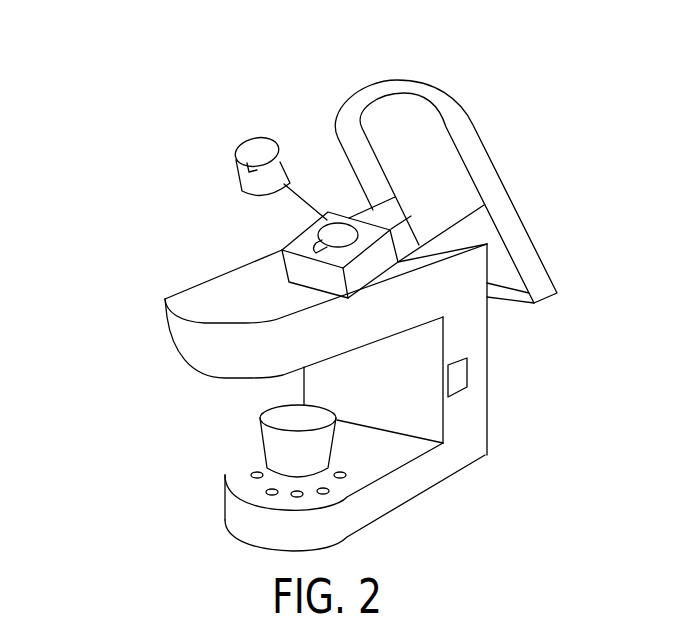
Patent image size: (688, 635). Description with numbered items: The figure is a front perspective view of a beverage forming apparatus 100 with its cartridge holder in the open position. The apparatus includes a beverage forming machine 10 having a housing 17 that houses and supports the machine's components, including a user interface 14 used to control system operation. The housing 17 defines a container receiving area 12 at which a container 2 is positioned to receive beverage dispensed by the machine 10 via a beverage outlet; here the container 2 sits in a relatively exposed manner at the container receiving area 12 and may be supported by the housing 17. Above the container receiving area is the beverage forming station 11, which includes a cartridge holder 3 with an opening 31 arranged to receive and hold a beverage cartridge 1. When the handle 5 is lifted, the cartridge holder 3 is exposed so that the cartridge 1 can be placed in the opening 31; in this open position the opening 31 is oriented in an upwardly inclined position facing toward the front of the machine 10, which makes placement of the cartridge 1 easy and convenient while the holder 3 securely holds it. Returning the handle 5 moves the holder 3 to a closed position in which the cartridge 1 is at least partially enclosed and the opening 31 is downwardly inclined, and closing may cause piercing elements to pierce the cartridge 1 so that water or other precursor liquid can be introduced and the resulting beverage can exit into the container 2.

The beverage cartridge 1 is at (255, 157).
The container 2 is at (285, 452).
The cartridge holder 3 is at (333, 227).
The handle 5 is at (433, 102).
The beverage forming machine 10 is at (525, 327).
The beverage forming station 11 is at (124, 285).
The container receiving area 12 is at (240, 468).
The user interface 14 is at (458, 375).
The housing 17 is at (487, 428).
The opening 31 is at (313, 238).
The beverage forming apparatus 100 is at (185, 222).